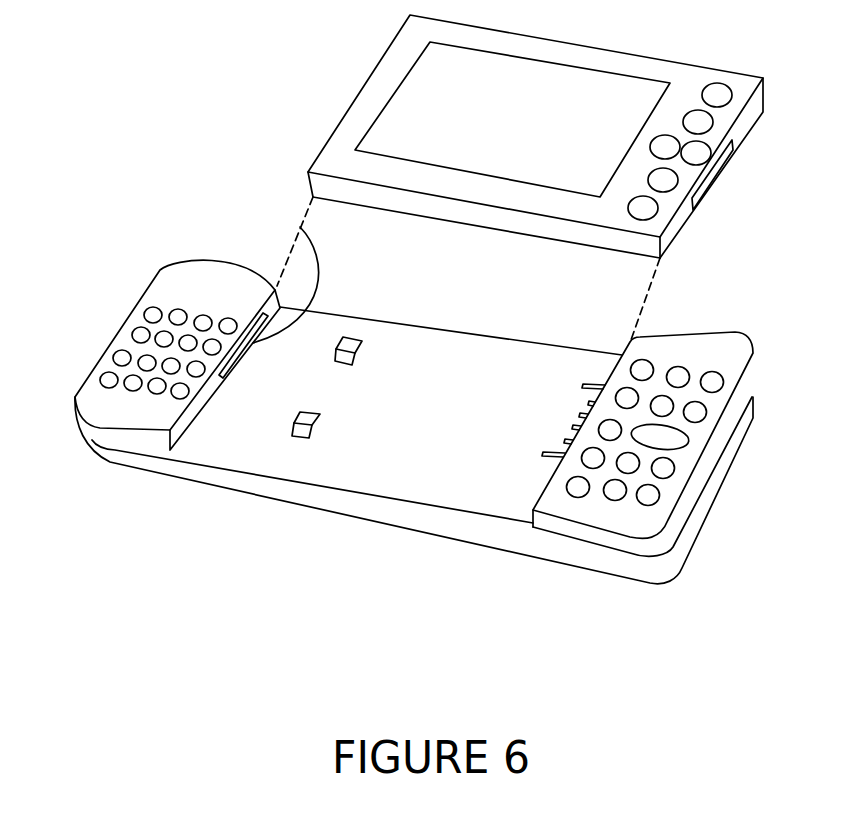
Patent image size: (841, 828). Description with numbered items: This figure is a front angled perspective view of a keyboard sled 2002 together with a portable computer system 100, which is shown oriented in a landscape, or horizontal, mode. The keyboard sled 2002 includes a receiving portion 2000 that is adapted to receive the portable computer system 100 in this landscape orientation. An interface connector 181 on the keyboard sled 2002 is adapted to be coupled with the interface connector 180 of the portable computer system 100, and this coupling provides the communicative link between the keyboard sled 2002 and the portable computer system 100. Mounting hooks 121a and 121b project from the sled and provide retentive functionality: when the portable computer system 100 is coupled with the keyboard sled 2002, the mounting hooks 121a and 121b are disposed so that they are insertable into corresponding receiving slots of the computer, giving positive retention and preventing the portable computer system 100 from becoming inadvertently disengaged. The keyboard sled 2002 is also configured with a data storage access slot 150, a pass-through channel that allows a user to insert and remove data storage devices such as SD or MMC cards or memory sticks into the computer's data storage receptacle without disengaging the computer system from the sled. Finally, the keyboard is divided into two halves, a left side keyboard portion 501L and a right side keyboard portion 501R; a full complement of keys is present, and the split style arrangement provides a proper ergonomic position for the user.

The portable computer system 100 is at (725, 117).
The interface connector 180 is at (710, 185).
The interface connector 181 is at (573, 410).
The data storage access slot 150 is at (300, 227).
The left side keyboard portion 501L is at (187, 277).
The right side keyboard portion 501R is at (720, 352).
The mounting hook 121a is at (353, 338).
The mounting hook 121b is at (303, 440).
The receiving portion 2000 is at (418, 460).
The keyboard sled 2002 is at (707, 493).